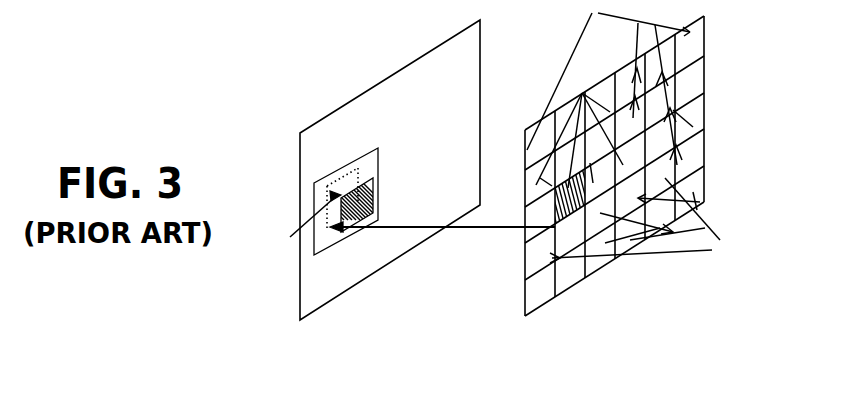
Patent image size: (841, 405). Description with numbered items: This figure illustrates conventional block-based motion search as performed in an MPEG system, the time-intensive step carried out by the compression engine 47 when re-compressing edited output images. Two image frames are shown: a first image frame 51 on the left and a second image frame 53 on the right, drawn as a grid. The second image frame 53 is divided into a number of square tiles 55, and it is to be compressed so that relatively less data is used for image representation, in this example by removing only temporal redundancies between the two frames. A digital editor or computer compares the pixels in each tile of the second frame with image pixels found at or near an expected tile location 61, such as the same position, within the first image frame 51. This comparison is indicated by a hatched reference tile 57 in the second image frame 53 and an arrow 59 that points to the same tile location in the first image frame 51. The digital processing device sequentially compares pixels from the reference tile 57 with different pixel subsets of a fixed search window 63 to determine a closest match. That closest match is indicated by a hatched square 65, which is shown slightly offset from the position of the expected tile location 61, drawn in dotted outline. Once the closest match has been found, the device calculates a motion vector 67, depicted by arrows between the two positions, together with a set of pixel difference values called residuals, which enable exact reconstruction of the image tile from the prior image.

The compression engine 47 is at (283, 92).
The first image frame 51 is at (383, 80).
The second image frame 53 is at (704, 56).
The square tiles 55 is at (633, 135).
The reference tile 57 is at (556, 226).
The arrow 59 is at (469, 229).
The expected tile location 61 is at (347, 182).
The search window 63 is at (337, 170).
The closest match 65 is at (372, 197).
The motion vector 67 is at (302, 222).